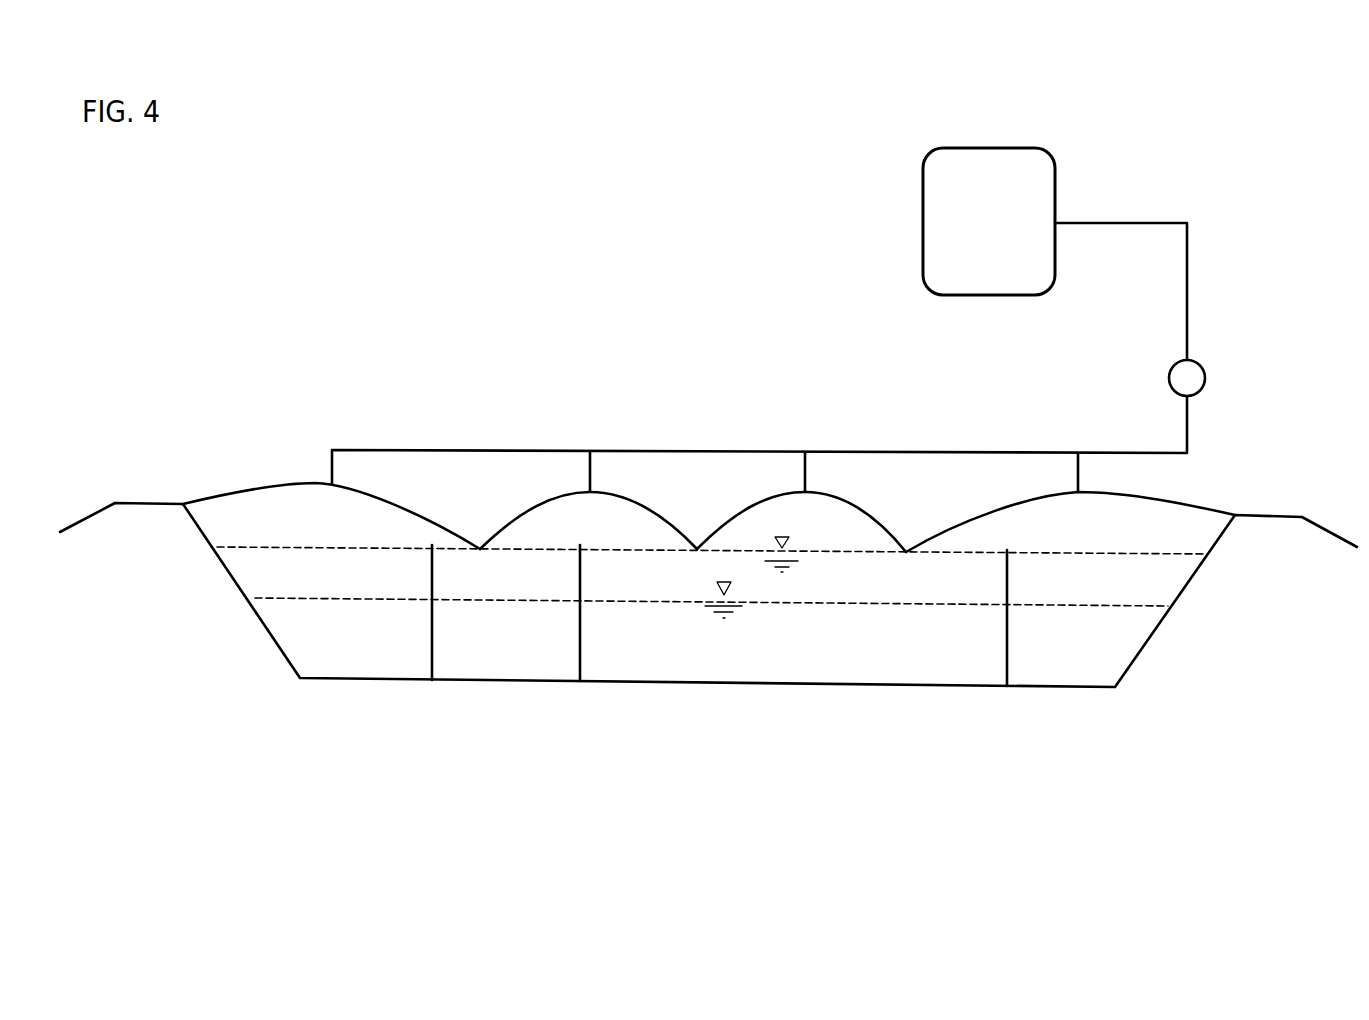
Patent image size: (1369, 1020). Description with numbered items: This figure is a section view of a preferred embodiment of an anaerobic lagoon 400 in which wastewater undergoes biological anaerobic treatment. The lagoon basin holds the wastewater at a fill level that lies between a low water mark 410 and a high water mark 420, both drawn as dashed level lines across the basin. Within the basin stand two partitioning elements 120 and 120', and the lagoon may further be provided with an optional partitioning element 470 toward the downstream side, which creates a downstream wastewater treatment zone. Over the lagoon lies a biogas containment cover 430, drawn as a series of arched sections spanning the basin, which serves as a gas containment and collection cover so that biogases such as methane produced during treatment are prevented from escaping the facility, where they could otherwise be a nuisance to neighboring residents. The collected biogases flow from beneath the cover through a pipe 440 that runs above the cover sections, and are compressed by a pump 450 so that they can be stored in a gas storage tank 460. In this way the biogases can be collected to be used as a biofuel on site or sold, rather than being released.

The anaerobic lagoon 400 is at (1168, 652).
The low water mark 410 is at (711, 618).
The high water mark 420 is at (712, 565).
The biogas containment cover 430 is at (232, 490).
The pipe 440 is at (653, 450).
The pump 450 is at (1167, 377).
The gas storage tank 460 is at (923, 240).
The optional partitioning element 470 is at (1005, 660).
The partitioning element 120 is at (504, 647).
The partitioning element 120' is at (641, 647).